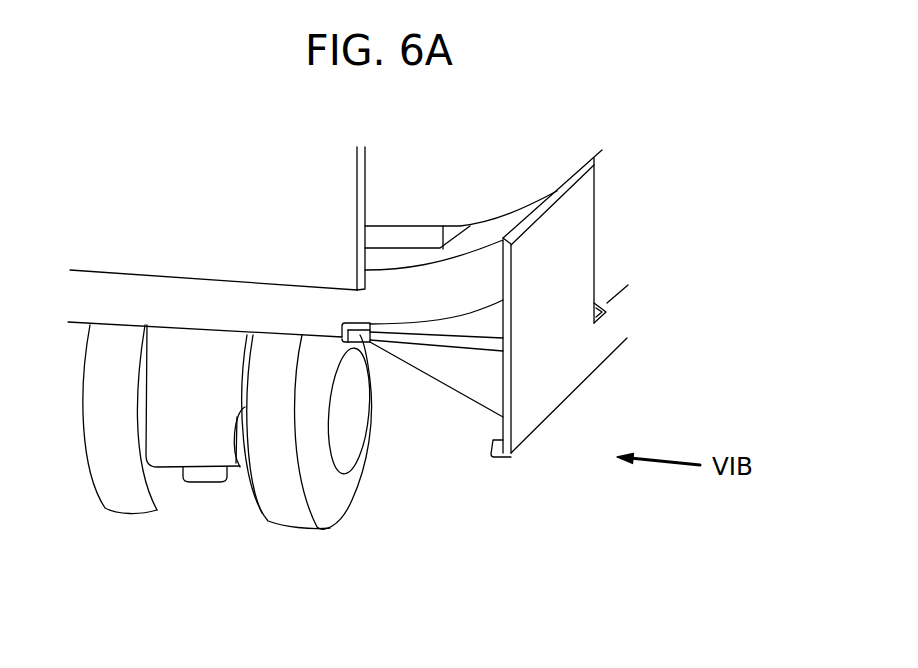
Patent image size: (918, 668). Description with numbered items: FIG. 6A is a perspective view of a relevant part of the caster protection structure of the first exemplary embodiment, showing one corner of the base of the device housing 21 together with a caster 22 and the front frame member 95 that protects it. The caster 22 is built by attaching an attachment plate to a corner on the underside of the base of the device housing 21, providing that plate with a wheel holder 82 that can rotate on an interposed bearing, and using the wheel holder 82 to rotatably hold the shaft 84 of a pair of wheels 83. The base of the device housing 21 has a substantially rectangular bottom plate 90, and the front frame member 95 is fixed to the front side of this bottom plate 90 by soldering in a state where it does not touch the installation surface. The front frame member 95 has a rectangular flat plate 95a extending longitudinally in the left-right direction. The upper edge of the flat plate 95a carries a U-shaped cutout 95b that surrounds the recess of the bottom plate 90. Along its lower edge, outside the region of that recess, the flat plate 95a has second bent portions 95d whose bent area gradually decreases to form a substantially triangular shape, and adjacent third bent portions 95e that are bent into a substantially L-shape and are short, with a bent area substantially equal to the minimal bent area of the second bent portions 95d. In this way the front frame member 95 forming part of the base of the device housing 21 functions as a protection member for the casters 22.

The device housing 21 is at (291, 200).
The caster 22 is at (156, 525).
The wheel holder 82 is at (200, 420).
The wheel 83 is at (326, 495).
The shaft 84 is at (238, 469).
The bottom plate 90 is at (430, 326).
The front frame member 95 is at (605, 373).
The flat plate 95a is at (563, 382).
The U-shaped cutout 95b is at (612, 292).
The second bent portion 95d is at (474, 371).
The third bent portion 95e is at (494, 458).